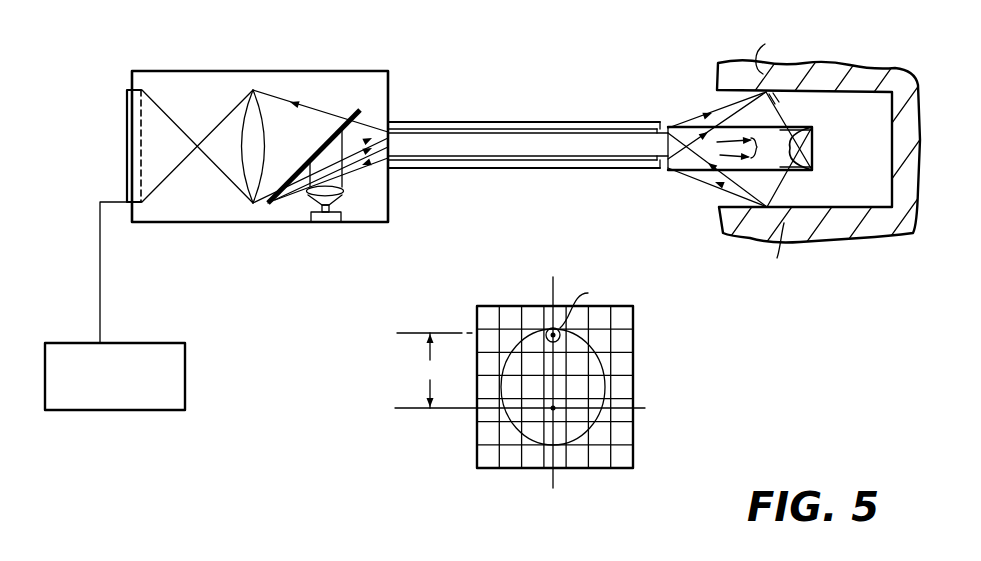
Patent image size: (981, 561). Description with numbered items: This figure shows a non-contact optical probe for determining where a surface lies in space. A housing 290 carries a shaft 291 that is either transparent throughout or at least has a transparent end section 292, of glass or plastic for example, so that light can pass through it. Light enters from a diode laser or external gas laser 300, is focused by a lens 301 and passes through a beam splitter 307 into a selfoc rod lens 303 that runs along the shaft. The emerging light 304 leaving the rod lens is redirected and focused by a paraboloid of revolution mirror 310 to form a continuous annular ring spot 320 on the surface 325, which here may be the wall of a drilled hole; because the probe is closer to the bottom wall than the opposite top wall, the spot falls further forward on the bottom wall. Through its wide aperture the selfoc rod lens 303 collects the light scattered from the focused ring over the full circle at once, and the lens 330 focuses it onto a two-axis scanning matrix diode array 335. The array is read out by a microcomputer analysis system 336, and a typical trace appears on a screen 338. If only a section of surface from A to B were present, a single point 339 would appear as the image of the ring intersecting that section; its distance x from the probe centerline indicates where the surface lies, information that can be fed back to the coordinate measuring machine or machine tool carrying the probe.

The housing 290 is at (390, 101).
The shaft 291 is at (481, 121).
The end section 292 is at (667, 94).
The diode laser 300 is at (333, 220).
The lens 301 is at (345, 191).
The selfoc rod lens 303 is at (537, 156).
The emerging light 304 is at (757, 152).
The beam splitter mirror 307 is at (358, 106).
The paraboloid of revolution mirror 310 is at (812, 148).
The annular ring spot 320 is at (783, 102).
The surface 325 is at (888, 66).
The lens 330 is at (256, 207).
The matrix diode array 335 is at (128, 140).
The microcomputer analysis system 336 is at (186, 372).
The screen 338 is at (634, 433).
The point 339 is at (548, 328).